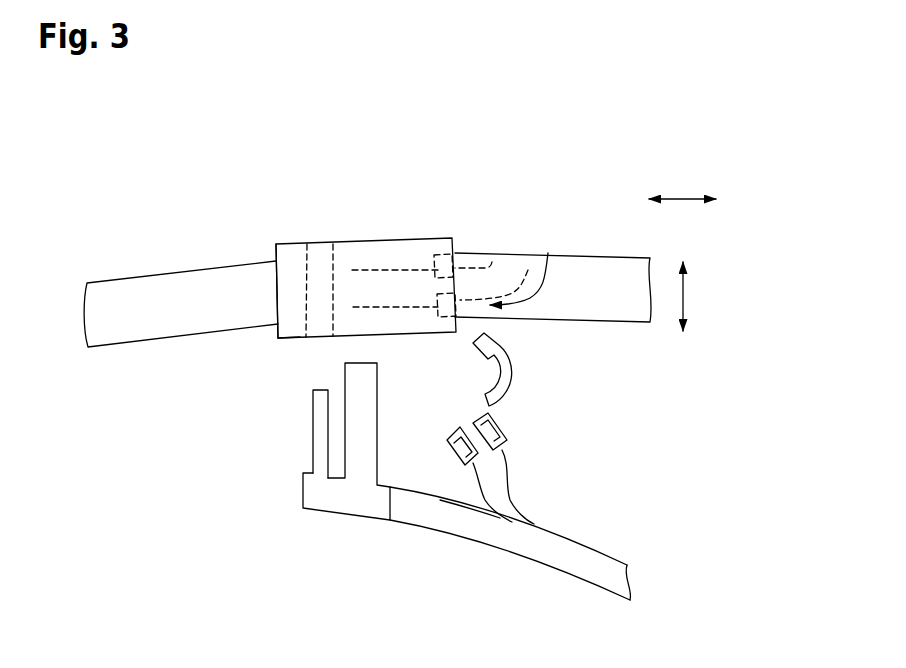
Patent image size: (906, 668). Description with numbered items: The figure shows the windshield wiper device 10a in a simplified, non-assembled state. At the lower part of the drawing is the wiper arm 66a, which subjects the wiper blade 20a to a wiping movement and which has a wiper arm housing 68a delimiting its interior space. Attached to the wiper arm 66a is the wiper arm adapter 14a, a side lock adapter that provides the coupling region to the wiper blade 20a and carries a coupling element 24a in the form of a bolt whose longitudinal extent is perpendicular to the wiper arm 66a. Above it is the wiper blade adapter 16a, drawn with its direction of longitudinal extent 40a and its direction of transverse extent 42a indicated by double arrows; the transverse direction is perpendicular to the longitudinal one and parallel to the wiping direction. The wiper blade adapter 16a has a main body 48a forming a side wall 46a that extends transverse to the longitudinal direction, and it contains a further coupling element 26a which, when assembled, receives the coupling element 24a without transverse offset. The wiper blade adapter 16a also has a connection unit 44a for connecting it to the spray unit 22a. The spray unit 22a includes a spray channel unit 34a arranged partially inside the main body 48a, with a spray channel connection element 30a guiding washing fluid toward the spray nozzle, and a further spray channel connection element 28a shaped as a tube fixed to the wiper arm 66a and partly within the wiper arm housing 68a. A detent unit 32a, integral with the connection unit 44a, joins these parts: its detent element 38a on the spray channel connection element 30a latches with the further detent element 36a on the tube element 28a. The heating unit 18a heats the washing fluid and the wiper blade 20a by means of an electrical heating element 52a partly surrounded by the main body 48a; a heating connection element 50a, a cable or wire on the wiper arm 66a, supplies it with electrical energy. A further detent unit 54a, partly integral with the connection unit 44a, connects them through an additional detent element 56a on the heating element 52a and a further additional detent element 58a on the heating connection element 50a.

The windshield wiper device 10a is at (567, 137).
The wiper arm adapter 14a is at (332, 495).
The wiper blade adapter 16a is at (280, 246).
The heating unit 18a is at (418, 308).
The wiper blade 20a is at (140, 325).
The spray unit 22a is at (381, 232).
The coupling element 24a is at (313, 447).
The further coupling element 26a is at (307, 244).
The further spray channel connection element 28a is at (508, 475).
The spray channel connection element 30a is at (413, 268).
The detent unit 32a is at (545, 338).
The spray channel unit 34a is at (350, 252).
The further detent element 36a is at (493, 420).
The detent element 38a is at (492, 262).
The direction of longitudinal extent 40a is at (682, 199).
The direction of transverse extent 42a is at (683, 296).
The connection unit 44a is at (548, 253).
The side wall 46a is at (458, 246).
The main body 48a is at (292, 336).
The heating connection element 50a is at (470, 500).
The heating element 52a is at (398, 336).
The further detent unit 54a is at (538, 365).
The additional detent element 56a is at (528, 270).
The further additional detent element 58a is at (452, 442).
The wiper arm 66a is at (487, 525).
The wiper arm housing 68a is at (620, 557).